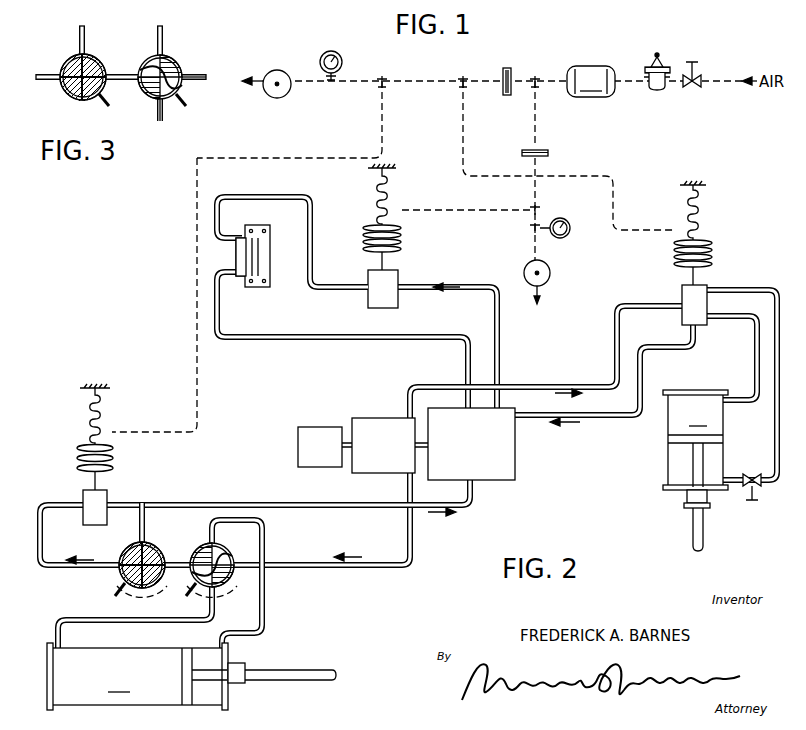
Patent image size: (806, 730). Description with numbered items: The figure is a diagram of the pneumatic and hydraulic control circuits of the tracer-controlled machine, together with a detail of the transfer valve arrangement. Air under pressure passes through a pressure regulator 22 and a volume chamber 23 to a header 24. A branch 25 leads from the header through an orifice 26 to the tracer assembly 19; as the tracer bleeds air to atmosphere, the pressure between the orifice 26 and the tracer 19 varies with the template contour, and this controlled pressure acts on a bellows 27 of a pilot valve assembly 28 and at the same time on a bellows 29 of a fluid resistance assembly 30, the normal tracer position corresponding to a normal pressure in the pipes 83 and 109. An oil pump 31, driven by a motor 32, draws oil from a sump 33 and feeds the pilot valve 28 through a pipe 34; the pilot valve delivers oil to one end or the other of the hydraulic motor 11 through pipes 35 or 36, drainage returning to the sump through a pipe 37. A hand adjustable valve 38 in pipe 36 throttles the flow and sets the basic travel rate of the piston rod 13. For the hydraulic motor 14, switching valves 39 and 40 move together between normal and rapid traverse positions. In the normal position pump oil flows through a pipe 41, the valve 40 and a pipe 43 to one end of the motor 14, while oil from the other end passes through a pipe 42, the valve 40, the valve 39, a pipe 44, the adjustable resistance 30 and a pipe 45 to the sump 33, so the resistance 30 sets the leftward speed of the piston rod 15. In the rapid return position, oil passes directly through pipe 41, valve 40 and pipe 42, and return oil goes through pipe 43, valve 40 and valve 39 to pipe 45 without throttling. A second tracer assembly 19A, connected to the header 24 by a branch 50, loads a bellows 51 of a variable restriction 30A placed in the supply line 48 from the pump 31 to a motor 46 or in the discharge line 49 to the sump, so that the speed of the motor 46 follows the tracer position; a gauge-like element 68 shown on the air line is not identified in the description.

In FIG. 2, the hydraulic motor 11 is at (695, 440).
In FIG. 2, the piston rod 13 is at (692, 530).
In FIG. 2, the hydraulic motor 14 is at (137, 676).
In FIG. 2, the piston rod 15 is at (298, 681).
In FIG. 2, the tracer assembly 19 is at (277, 70).
In FIG. 2, the tracer assembly 19A is at (551, 276).
In FIG. 2, the pressure regulator 22 is at (655, 92).
In FIG. 2, the volume chamber 23 is at (591, 81).
In FIG. 2, the header 24 is at (545, 86).
In FIG. 2, the branch 25 is at (410, 84).
In FIG. 2, the orifice 26 is at (510, 67).
In FIG. 2, the bellows 27 is at (713, 256).
In FIG. 2, the pilot valve assembly 28 is at (672, 294).
In FIG. 2, the bellows 29 is at (78, 454).
In FIG. 2, the fluid resistance assembly 30 is at (76, 495).
In FIG. 2, the variable fluid restriction 30A is at (366, 275).
In FIG. 2, the oil pump 31 is at (366, 474).
In FIG. 2, the motor 32 is at (306, 468).
In FIG. 2, the sump 33 is at (517, 460).
In FIG. 2, the pipe 34 is at (594, 384).
In FIG. 2, the pipe 35 is at (755, 368).
In FIG. 2, the pipe 36 is at (775, 428).
In FIG. 2, the pipe 37 is at (588, 418).
In FIG. 2, the hand adjustable valve 38 is at (752, 503).
In FIG. 3, the switching valve 39 is at (72, 58).
In FIG. 2, the switching valve 39 is at (120, 576).
In FIG. 3, the switching valve 40 is at (152, 57).
In FIG. 2, the switching valve 40 is at (202, 546).
In FIG. 3, the pipe 41 is at (190, 72).
In FIG. 2, the pipe 41 is at (378, 568).
In FIG. 3, the pipe 42 is at (164, 118).
In FIG. 2, the pipe 42 is at (106, 618).
In FIG. 3, the pipe 43 is at (165, 36).
In FIG. 2, the pipe 43 is at (266, 614).
In FIG. 3, the pipe 44 is at (40, 80).
In FIG. 2, the pipe 44 is at (58, 572).
In FIG. 3, the pipe 45 is at (85, 36).
In FIG. 2, the pipe 45 is at (203, 502).
In FIG. 2, the motor 46 is at (257, 288).
In FIG. 2, the supply line 48 is at (500, 366).
In FIG. 2, the discharge line 49 is at (466, 348).
In FIG. 2, the branch 50 is at (532, 110).
In FIG. 2, the bellows 51 is at (403, 243).
In FIG. 2, the pressure gauge 68 is at (342, 60).
In FIG. 2, the pipe 83 is at (598, 178).
In FIG. 2, the pipe 109 is at (200, 396).